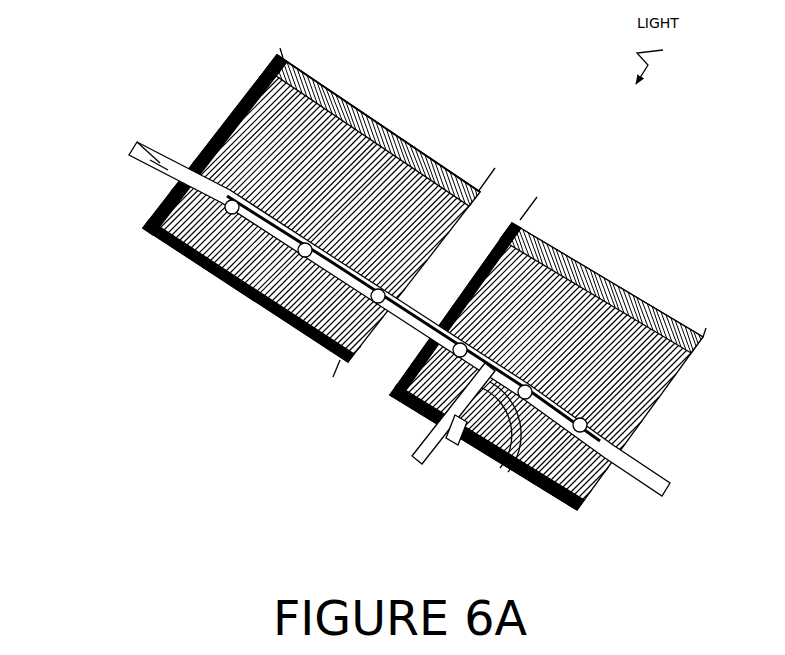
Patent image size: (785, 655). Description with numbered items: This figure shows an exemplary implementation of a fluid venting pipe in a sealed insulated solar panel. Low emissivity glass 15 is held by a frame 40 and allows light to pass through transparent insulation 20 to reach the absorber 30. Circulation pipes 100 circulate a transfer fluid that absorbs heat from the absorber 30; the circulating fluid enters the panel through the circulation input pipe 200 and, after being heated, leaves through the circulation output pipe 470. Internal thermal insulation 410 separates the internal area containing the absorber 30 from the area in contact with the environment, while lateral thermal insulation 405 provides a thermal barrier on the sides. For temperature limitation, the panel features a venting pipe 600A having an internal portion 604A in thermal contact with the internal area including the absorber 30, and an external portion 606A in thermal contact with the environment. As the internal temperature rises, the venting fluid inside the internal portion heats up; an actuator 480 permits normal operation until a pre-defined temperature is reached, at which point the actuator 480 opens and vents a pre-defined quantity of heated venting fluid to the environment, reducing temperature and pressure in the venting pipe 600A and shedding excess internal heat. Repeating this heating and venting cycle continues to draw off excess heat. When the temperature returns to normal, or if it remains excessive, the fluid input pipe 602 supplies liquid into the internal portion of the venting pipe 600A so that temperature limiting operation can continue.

The low emissivity glass 15 is at (245, 86).
The frame 40 is at (240, 95).
The transparent insulation 20 is at (300, 157).
The lateral thermal insulation 405 is at (137, 143).
The circulation output pipe 470 is at (167, 160).
The absorber 30 is at (158, 201).
The internal thermal insulation 410 is at (267, 269).
The actuator 480 is at (383, 403).
The circulation pipes 100 is at (650, 315).
The circulation input pipe 200 is at (652, 487).
The venting pipe 600A is at (468, 461).
The fluid input pipe 602 is at (495, 470).
The internal portion 604A is at (472, 445).
The external portion 606A is at (436, 455).